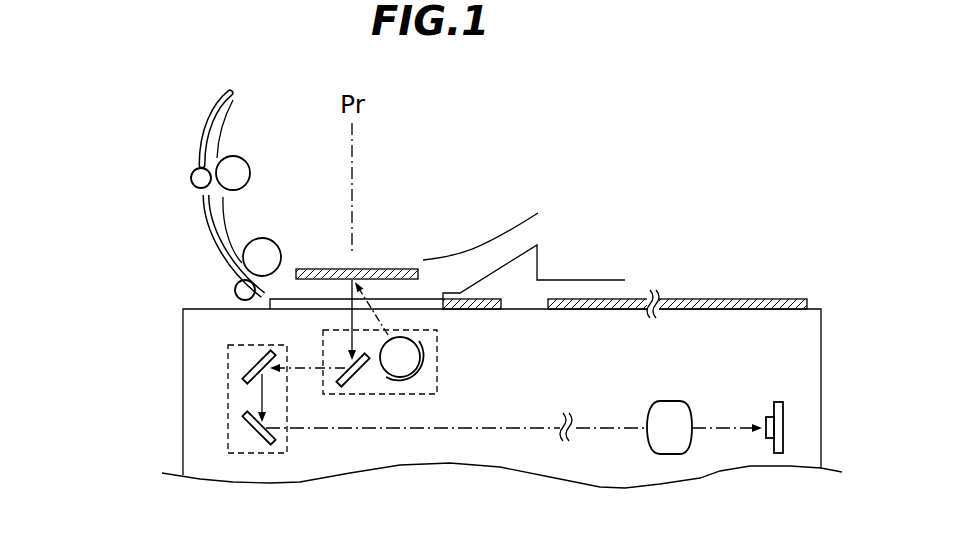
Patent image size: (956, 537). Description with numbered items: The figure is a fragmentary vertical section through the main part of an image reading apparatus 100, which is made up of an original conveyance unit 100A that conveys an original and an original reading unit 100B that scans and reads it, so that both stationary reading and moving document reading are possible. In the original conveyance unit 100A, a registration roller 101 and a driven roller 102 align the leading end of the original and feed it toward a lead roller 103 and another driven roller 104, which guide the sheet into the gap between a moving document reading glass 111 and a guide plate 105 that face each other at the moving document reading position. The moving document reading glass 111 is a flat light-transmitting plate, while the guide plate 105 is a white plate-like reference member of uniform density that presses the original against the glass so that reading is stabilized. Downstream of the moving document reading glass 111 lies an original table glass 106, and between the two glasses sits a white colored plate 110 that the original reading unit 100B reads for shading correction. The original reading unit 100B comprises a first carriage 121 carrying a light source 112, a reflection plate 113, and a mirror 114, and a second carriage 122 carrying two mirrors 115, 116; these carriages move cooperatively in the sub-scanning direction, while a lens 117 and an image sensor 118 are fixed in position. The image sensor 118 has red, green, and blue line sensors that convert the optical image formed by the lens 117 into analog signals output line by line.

The image reading apparatus 100 is at (488, 155).
The original conveyance unit 100A is at (142, 213).
The original reading unit 100B is at (143, 378).
The registration roller 101 is at (247, 160).
The driven roller 102 is at (191, 177).
The lead roller 103 is at (263, 238).
The driven roller 104 is at (235, 288).
The guide plate 105 is at (393, 268).
The original table glass 106 is at (720, 300).
The white colored plate 110 is at (485, 300).
The moving document reading glass 111 is at (427, 300).
The light source 112 is at (413, 353).
The reflection plate 113 is at (422, 377).
The mirror 114 is at (360, 372).
The mirror 115 is at (255, 365).
The mirror 116 is at (255, 432).
The lens 117 is at (672, 405).
The image sensor 118 is at (778, 402).
The first carriage 121 is at (406, 395).
The second carriage 122 is at (270, 453).